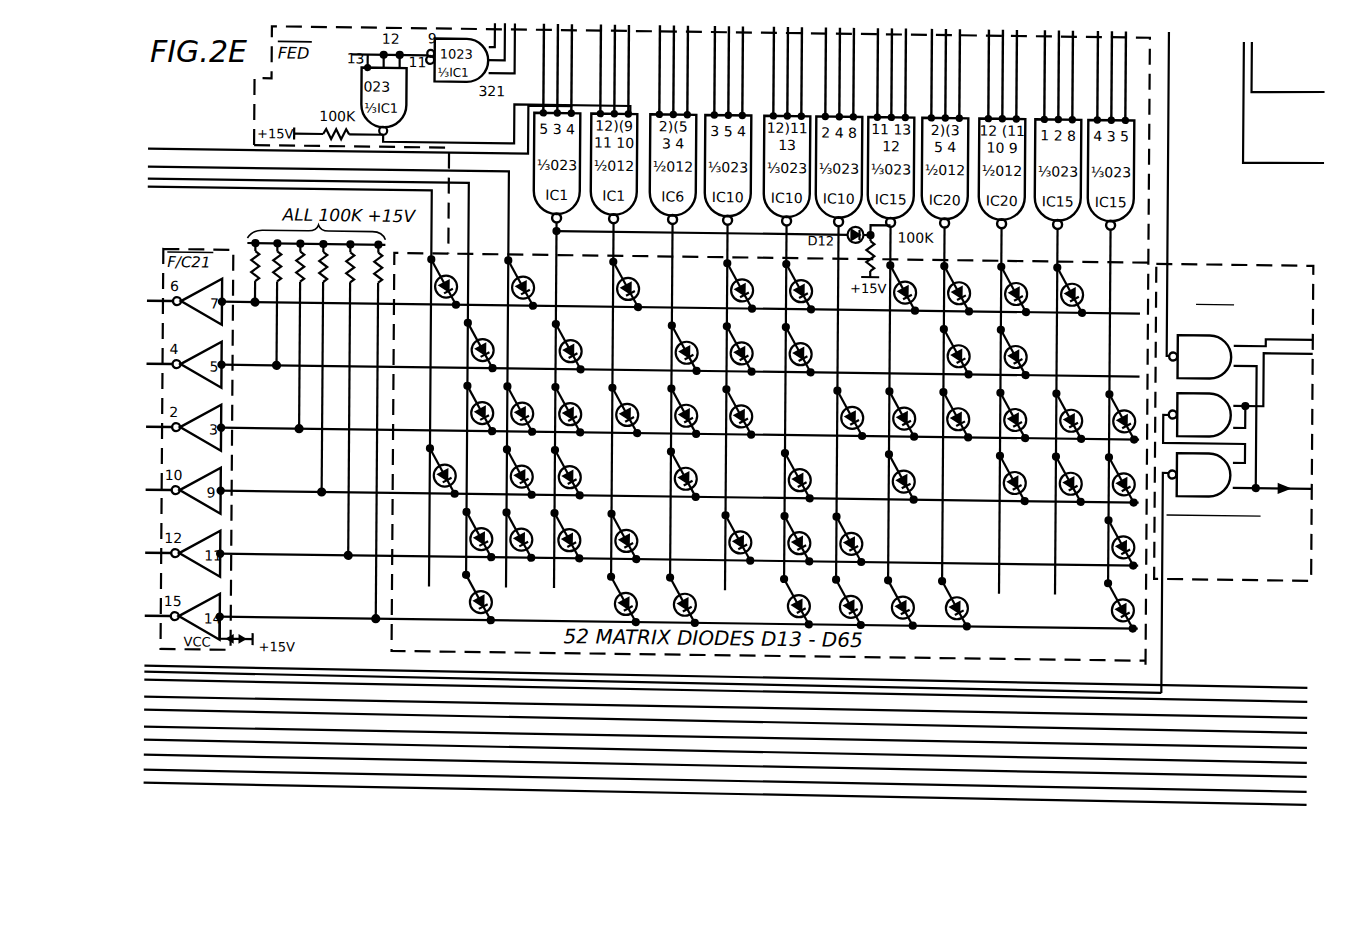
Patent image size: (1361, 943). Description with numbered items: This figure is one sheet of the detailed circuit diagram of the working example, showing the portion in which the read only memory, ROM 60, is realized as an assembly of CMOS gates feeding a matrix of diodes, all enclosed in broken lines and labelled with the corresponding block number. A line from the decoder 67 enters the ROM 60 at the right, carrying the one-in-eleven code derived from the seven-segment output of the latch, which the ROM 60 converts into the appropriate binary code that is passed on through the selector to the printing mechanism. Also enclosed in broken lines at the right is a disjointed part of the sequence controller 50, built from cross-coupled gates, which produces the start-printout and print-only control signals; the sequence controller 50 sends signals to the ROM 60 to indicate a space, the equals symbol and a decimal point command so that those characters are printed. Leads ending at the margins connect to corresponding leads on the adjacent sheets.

The sequence controller 50 is at (1213, 569).
The read only memory 60 is at (1148, 222).
The decoder 67 is at (1148, 106).